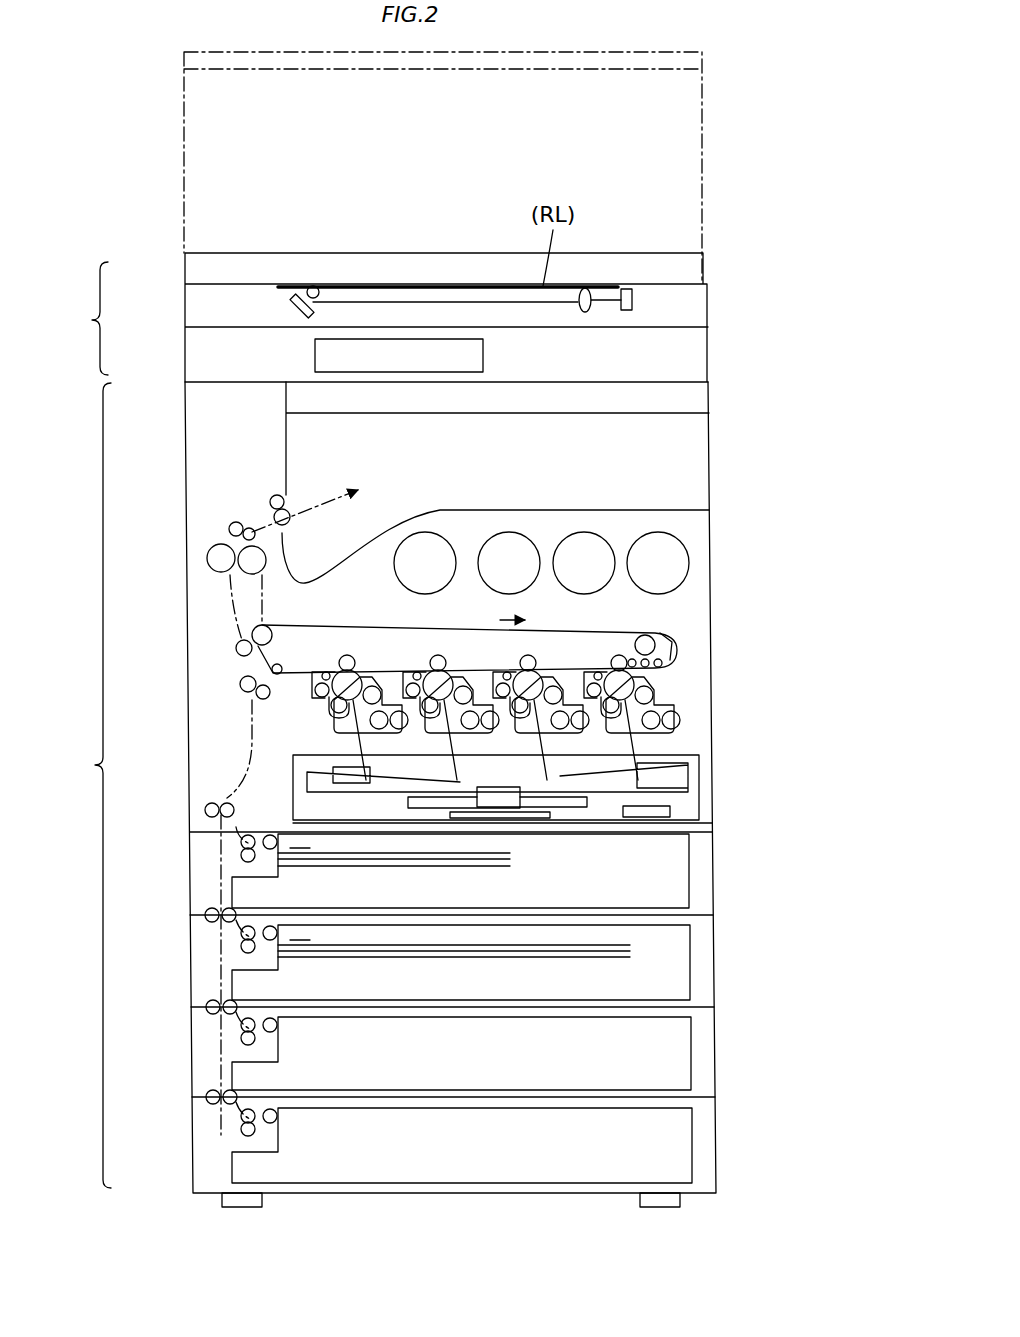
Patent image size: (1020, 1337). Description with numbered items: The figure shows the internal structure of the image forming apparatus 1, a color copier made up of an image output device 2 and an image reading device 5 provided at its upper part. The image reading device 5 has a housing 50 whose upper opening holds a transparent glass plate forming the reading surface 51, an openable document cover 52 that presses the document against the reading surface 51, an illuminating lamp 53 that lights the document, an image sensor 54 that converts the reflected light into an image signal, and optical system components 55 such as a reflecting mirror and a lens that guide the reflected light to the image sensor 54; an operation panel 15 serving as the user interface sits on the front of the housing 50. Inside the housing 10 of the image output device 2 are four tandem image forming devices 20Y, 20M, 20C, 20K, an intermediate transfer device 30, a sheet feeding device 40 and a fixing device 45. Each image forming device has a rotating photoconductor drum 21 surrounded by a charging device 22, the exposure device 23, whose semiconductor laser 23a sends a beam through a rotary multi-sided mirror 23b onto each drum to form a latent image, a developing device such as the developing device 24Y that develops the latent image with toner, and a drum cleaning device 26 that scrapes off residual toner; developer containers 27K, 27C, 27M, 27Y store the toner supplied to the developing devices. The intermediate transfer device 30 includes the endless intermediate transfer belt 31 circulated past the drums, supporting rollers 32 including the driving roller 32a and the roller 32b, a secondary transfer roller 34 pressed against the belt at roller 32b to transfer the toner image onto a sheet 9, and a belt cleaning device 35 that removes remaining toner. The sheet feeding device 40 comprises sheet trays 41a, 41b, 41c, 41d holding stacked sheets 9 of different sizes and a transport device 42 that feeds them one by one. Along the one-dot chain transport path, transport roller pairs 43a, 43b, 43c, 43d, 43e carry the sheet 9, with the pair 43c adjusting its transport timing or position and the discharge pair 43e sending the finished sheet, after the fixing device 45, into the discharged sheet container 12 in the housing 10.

The image forming apparatus 1 is at (120, 212).
The image output device 2 is at (92, 785).
The image reading device 5 is at (88, 318).
The sheet 9 is at (488, 866).
The housing 10 is at (716, 553).
The discharged sheet container 12 is at (663, 507).
The operation panel 15 is at (315, 355).
The image forming device (black) 20K is at (322, 663).
The image forming device (cyan) 20C is at (404, 663).
The image forming device (magenta) 20M is at (500, 663).
The image forming device (yellow) 20Y is at (678, 690).
The photoconductor drum 21 is at (543, 686).
The charging device 22 is at (340, 714).
The exposure device 23 is at (535, 815).
The semiconductor laser 23a is at (670, 811).
The rotary multi-sided mirror 23b is at (498, 795).
The developing device (yellow) 24Y is at (686, 720).
The drum cleaning device 26 is at (316, 698).
The developer container (black) 27K is at (425, 563).
The developer container (cyan) 27C is at (509, 563).
The developer container (magenta) 27M is at (584, 563).
The developer container (yellow) 27Y is at (658, 563).
The intermediate transfer device 30 is at (456, 627).
The intermediate transfer belt 31 is at (447, 668).
The supporting rollers 32 is at (350, 665).
The supporting roller (driving roller) 32a is at (656, 640).
The supporting roller 32b is at (262, 624).
The secondary transfer roller 34 is at (235, 648).
The belt cleaning device 35 is at (680, 648).
The sheet feeding device 40 is at (447, 997).
The sheet tray 41a is at (689, 872).
The sheet tray 41b is at (690, 967).
The sheet tray 41c is at (691, 1052).
The sheet tray 41d is at (692, 1145).
The transport device 42 is at (258, 834).
The transport roller pair 43a is at (212, 1000).
The transport roller pair 43b is at (210, 803).
The transport roller pair 43c is at (242, 688).
The transport roller pair 43d is at (230, 524).
The transport roller pair (discharge rollers) 43e is at (272, 497).
The fixing device 45 is at (203, 545).
The housing 50 is at (708, 295).
The reading surface 51 is at (460, 286).
The document cover 52 is at (704, 215).
The illuminating lamp 53 is at (318, 286).
The image sensor 54 is at (627, 311).
The optical system components 55 is at (292, 305).